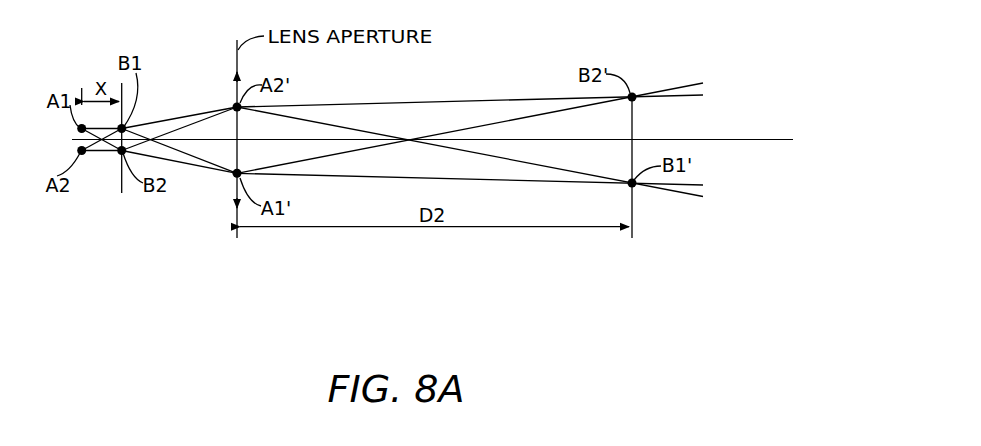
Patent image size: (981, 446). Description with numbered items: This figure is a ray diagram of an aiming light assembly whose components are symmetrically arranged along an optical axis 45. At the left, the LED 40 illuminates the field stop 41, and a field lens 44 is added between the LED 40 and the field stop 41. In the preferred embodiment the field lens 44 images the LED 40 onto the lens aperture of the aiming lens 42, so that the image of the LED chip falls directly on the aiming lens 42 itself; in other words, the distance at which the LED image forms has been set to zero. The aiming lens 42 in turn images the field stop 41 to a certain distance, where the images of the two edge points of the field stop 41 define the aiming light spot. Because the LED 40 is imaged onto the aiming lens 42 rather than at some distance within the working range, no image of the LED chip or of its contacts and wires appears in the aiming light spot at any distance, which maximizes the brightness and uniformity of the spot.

The LED 40 is at (82, 158).
The field stop 41 is at (124, 183).
The aiming lens 42 is at (231, 184).
The field lens 44 is at (130, 134).
The optical axis 45 is at (718, 140).